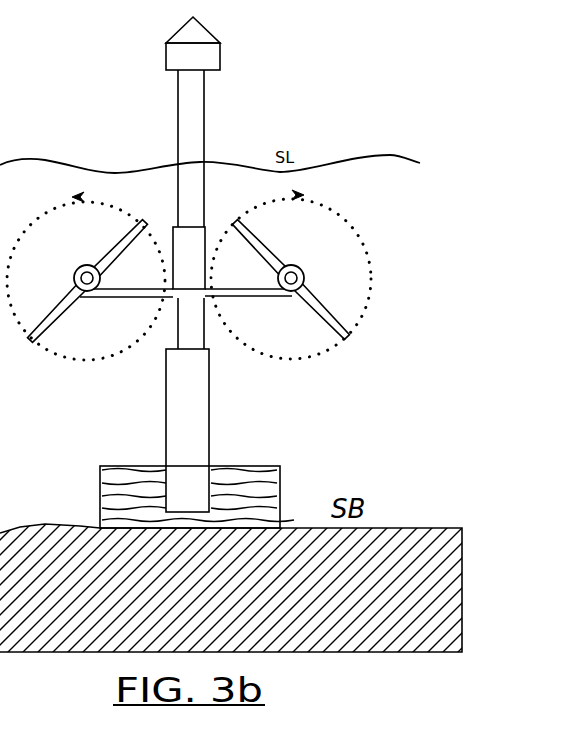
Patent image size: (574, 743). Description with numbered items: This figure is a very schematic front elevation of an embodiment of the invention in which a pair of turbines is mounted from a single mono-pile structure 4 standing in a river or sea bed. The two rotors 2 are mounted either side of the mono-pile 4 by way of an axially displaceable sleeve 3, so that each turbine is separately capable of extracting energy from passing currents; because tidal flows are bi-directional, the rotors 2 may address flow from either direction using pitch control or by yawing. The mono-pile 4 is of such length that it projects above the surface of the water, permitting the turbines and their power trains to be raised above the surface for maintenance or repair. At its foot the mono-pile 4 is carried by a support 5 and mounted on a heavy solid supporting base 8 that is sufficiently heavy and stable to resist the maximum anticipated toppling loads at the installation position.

The rotor 2 is at (330, 320).
The axially displaceable sleeve 3 is at (201, 263).
The mono-pile structure 4 is at (190, 128).
The support 5 is at (188, 438).
The heavy solid supporting base 8 is at (270, 476).